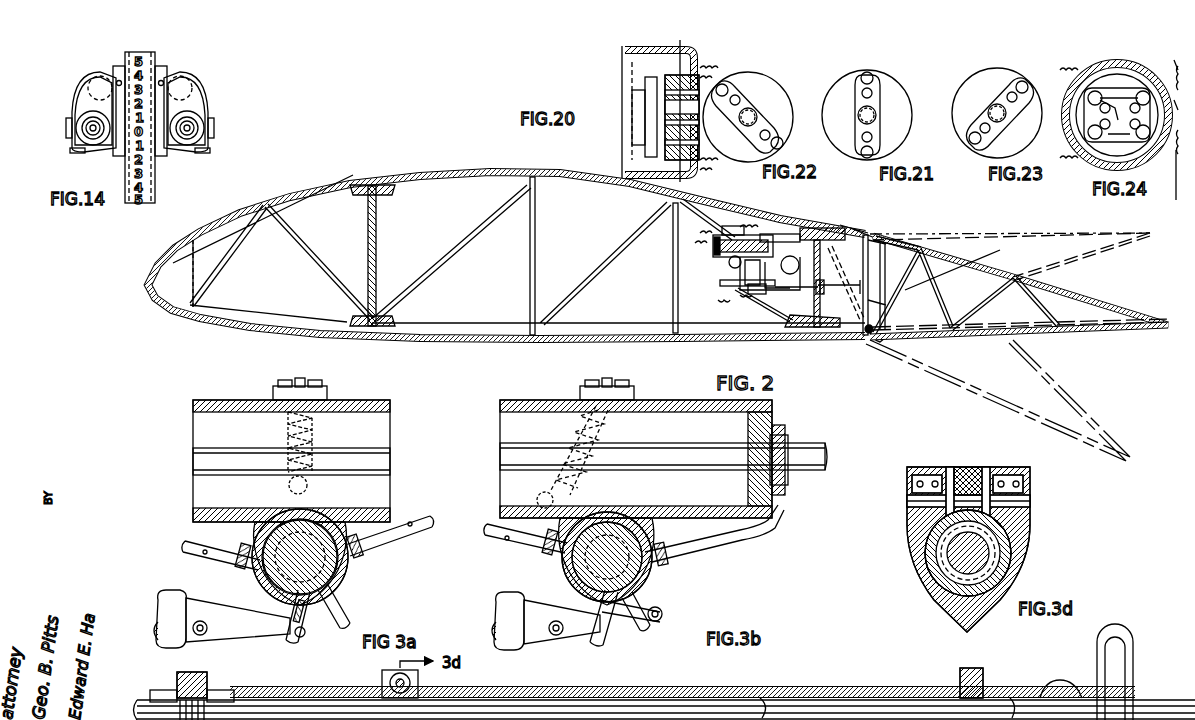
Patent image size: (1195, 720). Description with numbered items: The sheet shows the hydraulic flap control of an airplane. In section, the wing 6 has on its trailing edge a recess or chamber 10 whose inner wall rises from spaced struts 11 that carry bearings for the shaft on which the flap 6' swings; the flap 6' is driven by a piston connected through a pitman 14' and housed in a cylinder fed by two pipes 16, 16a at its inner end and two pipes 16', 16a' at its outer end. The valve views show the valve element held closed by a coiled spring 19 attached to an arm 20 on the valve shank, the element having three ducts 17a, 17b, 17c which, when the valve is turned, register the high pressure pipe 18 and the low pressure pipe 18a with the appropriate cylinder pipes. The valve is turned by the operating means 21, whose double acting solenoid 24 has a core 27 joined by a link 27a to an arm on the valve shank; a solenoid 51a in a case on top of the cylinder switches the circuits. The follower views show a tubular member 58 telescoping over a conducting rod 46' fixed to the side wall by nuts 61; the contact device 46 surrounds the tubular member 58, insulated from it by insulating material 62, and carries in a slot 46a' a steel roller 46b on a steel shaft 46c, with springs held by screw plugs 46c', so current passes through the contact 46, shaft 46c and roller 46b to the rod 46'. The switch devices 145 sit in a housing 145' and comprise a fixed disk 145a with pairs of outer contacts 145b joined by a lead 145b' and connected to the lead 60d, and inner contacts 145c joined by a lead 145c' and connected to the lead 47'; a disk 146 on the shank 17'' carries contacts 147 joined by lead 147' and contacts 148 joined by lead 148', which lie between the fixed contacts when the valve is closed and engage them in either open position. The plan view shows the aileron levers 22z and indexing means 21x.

In FIG. 14, the lever 22z is at (80, 110).
In FIG. 14, the indexing means 21x is at (190, 175).
In FIG. 20, the housing 145' is at (619, 114).
In FIG. 24, the housing 145' is at (1111, 133).
In FIG. 20, the shank 17'' is at (635, 117).
In FIG. 20, the disk 146 is at (665, 142).
In FIG. 22, the disk 146 is at (781, 98).
In FIG. 23, the disk 146 is at (988, 75).
In FIG. 20, the operating means 21 is at (620, 50).
In FIG. 20, the double acting solenoid 24 is at (700, 50).
In FIG. 22, the contacts 148 is at (744, 117).
In FIG. 21, the contacts 148 is at (892, 110).
In FIG. 23, the contacts 148 is at (1001, 114).
In FIG. 22, the contacts 147 is at (749, 74).
In FIG. 21, the contacts 147 is at (885, 67).
In FIG. 23, the contacts 147 is at (967, 152).
In FIG. 22, the lead 147' is at (780, 103).
In FIG. 21, the lead 147' is at (887, 127).
In FIG. 23, the lead 147' is at (1013, 118).
In FIG. 22, the switch devices 145 is at (723, 112).
In FIG. 22, the lead 148' is at (750, 140).
In FIG. 21, the lead 148' is at (850, 115).
In FIG. 23, the lead 148' is at (989, 112).
In FIG. 24, the disk 145a is at (1090, 100).
In FIG. 24, the contacts 145b is at (1126, 113).
In FIG. 24, the lead 145b' is at (1121, 91).
In FIG. 24, the contacts 145c is at (1093, 116).
In FIG. 24, the lead 145c' is at (1136, 116).
In FIG. 24, the lead 60d is at (1062, 66).
In FIG. 24, the lead 47' is at (1168, 132).
In FIG. 2, the wing 6 is at (506, 244).
In FIG. 2, the solenoid 51a is at (742, 226).
In FIG. 2, the pitman 14' is at (861, 223).
In FIG. 2, the recess or chamber 10 is at (860, 264).
In FIG. 2, the struts 11 is at (856, 336).
In FIG. 2, the flap 6' is at (1017, 347).
In FIG. 3a, the coiled spring 19 is at (316, 433).
In FIG. 3b, the coiled spring 19 is at (618, 424).
In FIG. 3a, the arm 20 is at (306, 494).
In FIG. 3b, the arm 20 is at (547, 526).
In FIG. 3a, the duct 17b is at (263, 585).
In FIG. 3b, the duct 17b is at (572, 585).
In FIG. 3a, the duct 17c is at (338, 588).
In FIG. 3b, the duct 17c is at (640, 536).
In FIG. 3a, the pipe 16 is at (389, 549).
In FIG. 3b, the pipe 16 is at (714, 545).
In FIG. 3a, the pipe 16a is at (422, 517).
In FIG. 3a, the pipe 16a' is at (211, 563).
In FIG. 3b, the pipe 16a' is at (512, 554).
In FIG. 3a, the pipe 16' is at (227, 564).
In FIG. 3b, the pipe 16' is at (530, 557).
In FIG. 3a, the duct 17a is at (285, 610).
In FIG. 3b, the duct 17a is at (645, 592).
In FIG. 3a, the pipe 18a is at (322, 622).
In FIG. 3b, the pipe 18a is at (640, 645).
In FIG. 3a, the pipe 18 is at (286, 642).
In FIG. 3b, the pipe 18 is at (600, 645).
In FIG. 3a, the core 27 is at (162, 612).
In FIG. 3a, the link 27a is at (250, 635).
In FIG. 3d, the contact device 46 is at (968, 561).
In FIG. 3d, the steel shaft 46c is at (988, 496).
In FIG. 3d, the slot 46a' is at (941, 481).
In FIG. 3d, the steel roller 46b is at (968, 467).
In FIG. 3c, the steel roller 46b is at (382, 680).
In FIG. 3d, the screw plugs 46c' is at (1010, 482).
In FIG. 3d, the insulating material 62 is at (1025, 554).
In FIG. 3d, the rod 46' is at (932, 553).
In FIG. 3c, the tubular member 58 is at (833, 690).
In FIG. 3c, the nuts 61 is at (165, 690).